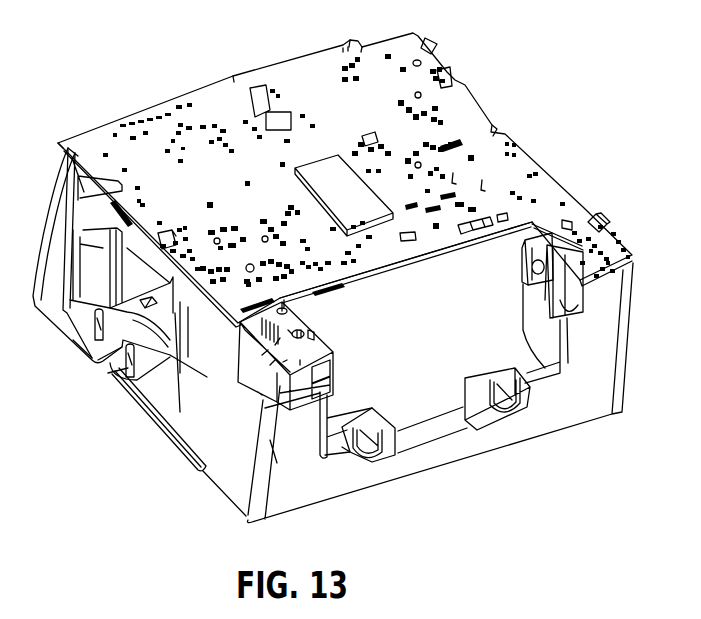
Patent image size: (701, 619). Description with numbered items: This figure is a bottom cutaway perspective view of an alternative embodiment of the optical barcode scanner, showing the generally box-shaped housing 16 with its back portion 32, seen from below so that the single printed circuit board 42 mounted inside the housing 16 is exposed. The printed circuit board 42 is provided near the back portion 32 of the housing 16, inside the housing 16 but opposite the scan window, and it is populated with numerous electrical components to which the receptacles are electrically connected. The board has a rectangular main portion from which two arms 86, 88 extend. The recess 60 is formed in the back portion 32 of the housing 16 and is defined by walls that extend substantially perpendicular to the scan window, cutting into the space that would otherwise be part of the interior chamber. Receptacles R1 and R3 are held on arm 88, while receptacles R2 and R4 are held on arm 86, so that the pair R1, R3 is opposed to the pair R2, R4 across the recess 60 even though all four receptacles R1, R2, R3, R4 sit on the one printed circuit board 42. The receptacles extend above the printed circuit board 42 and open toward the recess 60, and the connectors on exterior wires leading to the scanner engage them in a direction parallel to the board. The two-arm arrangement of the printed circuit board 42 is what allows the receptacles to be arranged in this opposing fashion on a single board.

The housing 16 is at (53, 296).
The back portion 32 is at (176, 414).
The printed circuit board 42 is at (305, 63).
The recess 60 is at (440, 392).
The arm 86 is at (608, 214).
The arm 88 is at (291, 305).
The receptacle R1 is at (333, 373).
The receptacle R2 is at (528, 263).
The receptacle R3 is at (318, 327).
The receptacle R4 is at (560, 292).